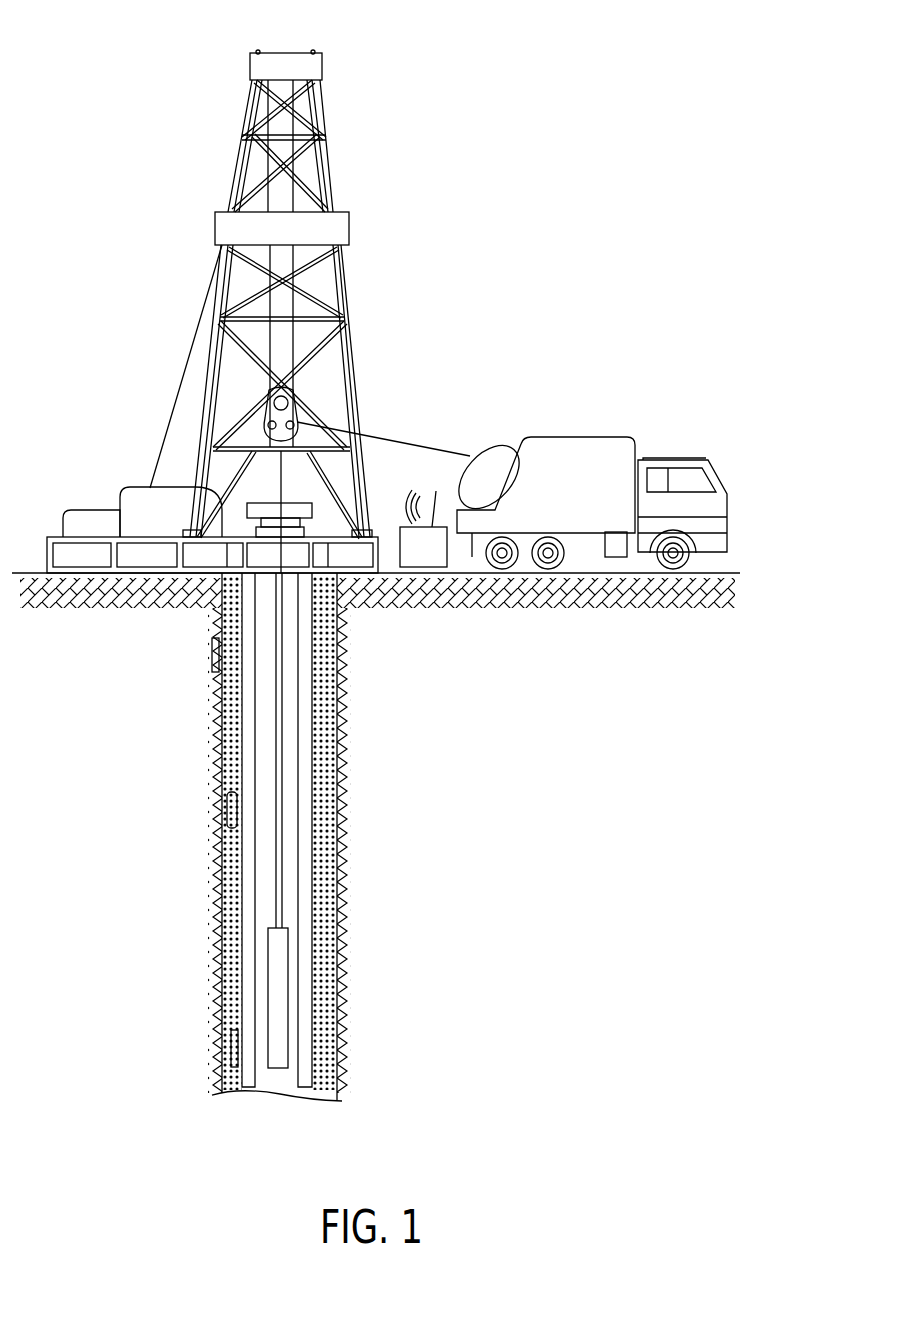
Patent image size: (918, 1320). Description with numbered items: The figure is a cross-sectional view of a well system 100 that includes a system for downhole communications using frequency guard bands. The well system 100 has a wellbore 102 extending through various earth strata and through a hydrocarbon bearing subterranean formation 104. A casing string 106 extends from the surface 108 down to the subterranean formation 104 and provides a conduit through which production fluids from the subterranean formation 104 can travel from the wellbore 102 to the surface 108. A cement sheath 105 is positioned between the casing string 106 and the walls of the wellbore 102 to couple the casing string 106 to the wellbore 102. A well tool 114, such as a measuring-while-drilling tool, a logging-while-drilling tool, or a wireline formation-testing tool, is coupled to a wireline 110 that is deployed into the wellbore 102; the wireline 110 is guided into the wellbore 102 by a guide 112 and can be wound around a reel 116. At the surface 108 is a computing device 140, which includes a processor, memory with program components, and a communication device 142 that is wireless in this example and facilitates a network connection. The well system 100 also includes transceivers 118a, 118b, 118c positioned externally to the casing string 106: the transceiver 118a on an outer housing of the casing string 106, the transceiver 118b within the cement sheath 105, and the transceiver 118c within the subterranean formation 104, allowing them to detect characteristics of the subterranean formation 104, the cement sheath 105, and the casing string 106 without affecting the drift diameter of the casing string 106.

The well system 100 is at (570, 183).
The wellbore 102 is at (340, 795).
The subterranean formation 104 is at (348, 711).
The cement sheath 105 is at (323, 945).
The casing string 106 is at (305, 772).
The surface 108 is at (312, 508).
The wireline 110 is at (400, 438).
The guide 112 is at (292, 402).
The well tool 114 is at (288, 945).
The reel 116 is at (497, 455).
The transceiver 118a is at (238, 1052).
The transceiver 118b is at (228, 812).
The transceiver 118c is at (212, 655).
The computing device 140 is at (423, 567).
The communication device 142 is at (435, 491).